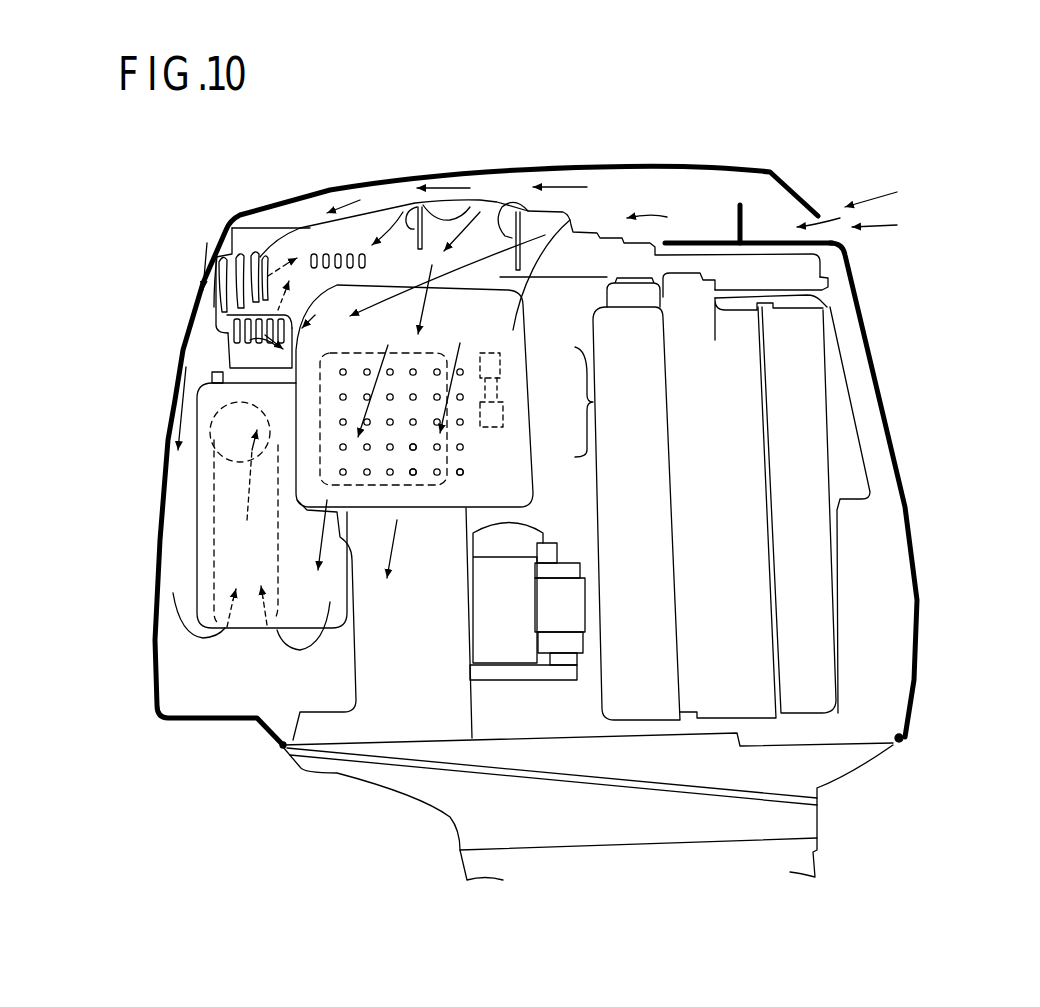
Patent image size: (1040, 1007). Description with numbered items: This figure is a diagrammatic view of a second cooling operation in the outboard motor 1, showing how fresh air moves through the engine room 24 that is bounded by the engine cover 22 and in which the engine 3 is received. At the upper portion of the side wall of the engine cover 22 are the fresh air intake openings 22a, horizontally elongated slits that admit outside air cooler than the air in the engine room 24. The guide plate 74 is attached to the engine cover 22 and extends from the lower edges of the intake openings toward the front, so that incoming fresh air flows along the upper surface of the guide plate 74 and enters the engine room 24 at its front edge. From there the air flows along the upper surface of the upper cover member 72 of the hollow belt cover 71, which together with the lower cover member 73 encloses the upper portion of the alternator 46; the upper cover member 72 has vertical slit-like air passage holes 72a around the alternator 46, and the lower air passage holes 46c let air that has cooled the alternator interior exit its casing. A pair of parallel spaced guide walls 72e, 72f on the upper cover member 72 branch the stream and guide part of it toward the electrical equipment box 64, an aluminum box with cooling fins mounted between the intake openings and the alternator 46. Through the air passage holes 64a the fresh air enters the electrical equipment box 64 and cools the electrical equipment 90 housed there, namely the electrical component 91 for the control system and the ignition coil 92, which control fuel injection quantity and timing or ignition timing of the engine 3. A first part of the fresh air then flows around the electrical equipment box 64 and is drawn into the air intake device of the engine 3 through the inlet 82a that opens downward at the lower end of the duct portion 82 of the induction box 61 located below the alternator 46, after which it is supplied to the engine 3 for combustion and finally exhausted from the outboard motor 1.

The outboard motor 1 is at (117, 193).
The engine 3 is at (580, 742).
The engine cover 22 is at (648, 168).
The fresh air intake opening 22a is at (846, 233).
The engine room 24 is at (881, 634).
The alternator 46 is at (267, 353).
The lower air passage holes 46c is at (240, 340).
The induction box 61 is at (193, 505).
The electrical equipment box 64 is at (507, 486).
The air passage holes 64a is at (462, 478).
The belt cover 71 is at (314, 221).
The upper cover member 72 is at (347, 242).
The air passage holes 72a is at (220, 306).
The guide wall 72e is at (503, 206).
The guide wall 72f is at (408, 204).
The lower cover member 73 is at (835, 300).
The guide plate 74 is at (770, 233).
The duct portion 82 is at (233, 555).
The inlet 82a is at (257, 633).
The electrical equipment 90 is at (593, 402).
The electrical component 91 is at (447, 452).
The ignition coil 92 is at (500, 370).